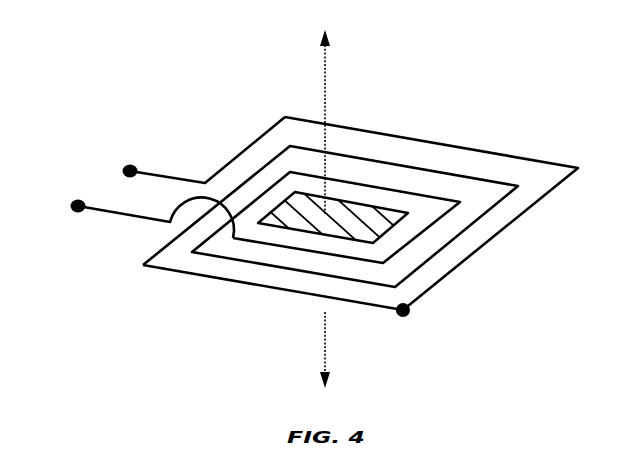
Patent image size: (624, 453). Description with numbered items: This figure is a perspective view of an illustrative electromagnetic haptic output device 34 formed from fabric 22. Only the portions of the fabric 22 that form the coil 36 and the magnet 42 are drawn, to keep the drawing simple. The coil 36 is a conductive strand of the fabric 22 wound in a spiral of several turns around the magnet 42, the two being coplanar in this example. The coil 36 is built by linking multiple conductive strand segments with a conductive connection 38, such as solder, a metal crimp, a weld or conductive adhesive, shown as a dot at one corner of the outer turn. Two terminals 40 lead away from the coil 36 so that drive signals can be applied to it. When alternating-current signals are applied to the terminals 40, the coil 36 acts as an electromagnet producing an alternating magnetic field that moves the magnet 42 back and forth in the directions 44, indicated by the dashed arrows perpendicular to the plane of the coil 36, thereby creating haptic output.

The fabric 22 is at (128, 265).
The electromagnetic haptic output device 34 is at (503, 92).
The coil 36 is at (487, 244).
The connection 38 is at (403, 318).
The terminals 40 is at (122, 170).
The magnet 42 is at (383, 212).
The directions 44 is at (327, 83).